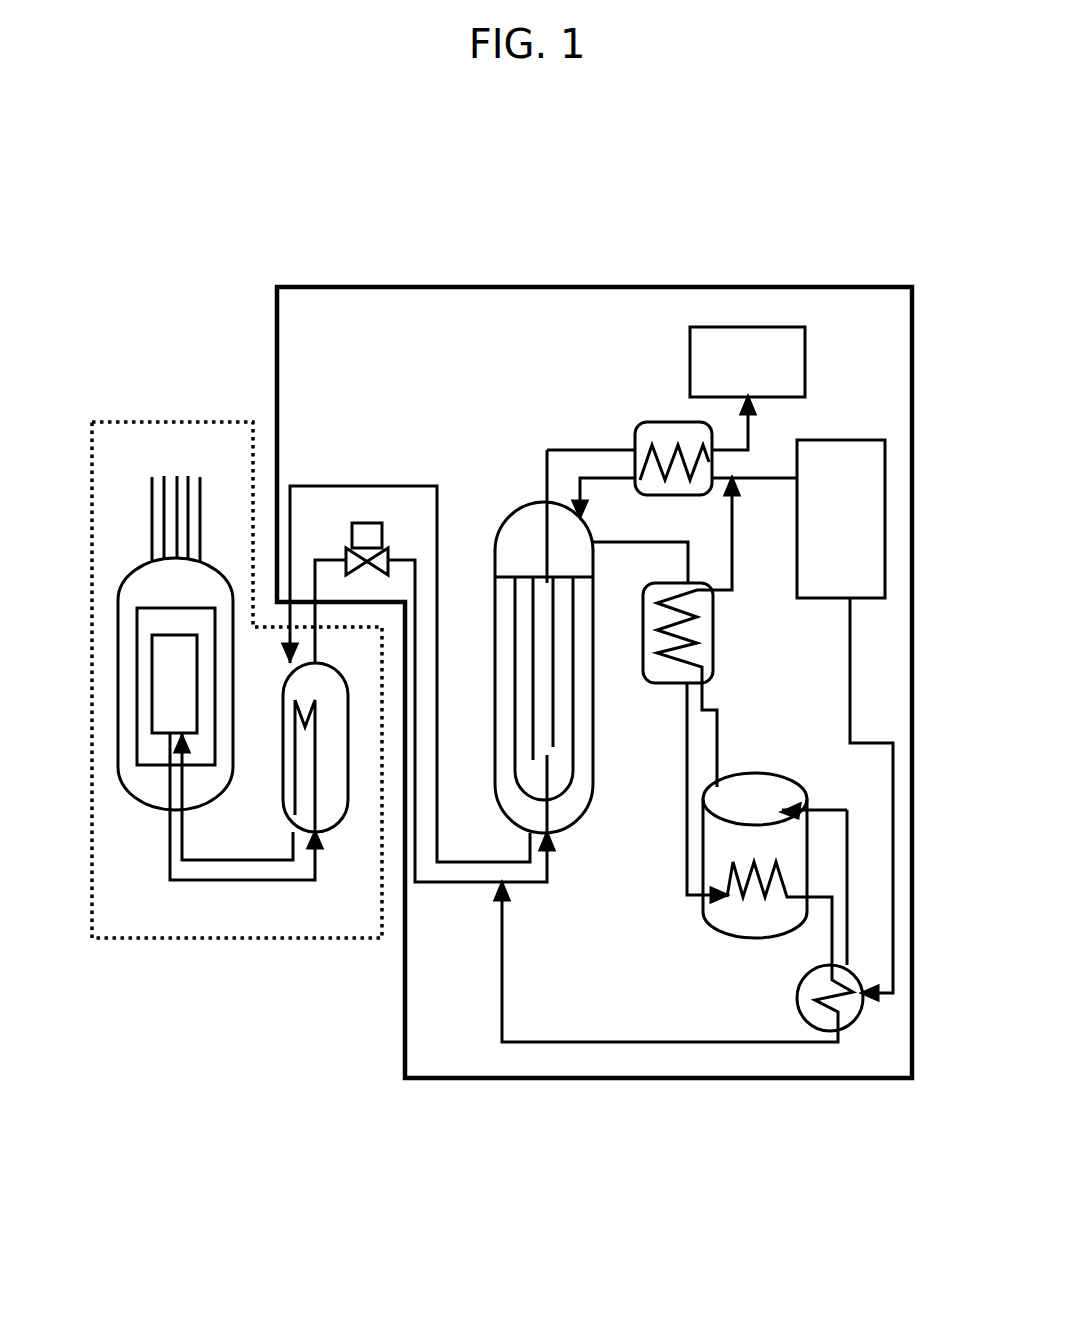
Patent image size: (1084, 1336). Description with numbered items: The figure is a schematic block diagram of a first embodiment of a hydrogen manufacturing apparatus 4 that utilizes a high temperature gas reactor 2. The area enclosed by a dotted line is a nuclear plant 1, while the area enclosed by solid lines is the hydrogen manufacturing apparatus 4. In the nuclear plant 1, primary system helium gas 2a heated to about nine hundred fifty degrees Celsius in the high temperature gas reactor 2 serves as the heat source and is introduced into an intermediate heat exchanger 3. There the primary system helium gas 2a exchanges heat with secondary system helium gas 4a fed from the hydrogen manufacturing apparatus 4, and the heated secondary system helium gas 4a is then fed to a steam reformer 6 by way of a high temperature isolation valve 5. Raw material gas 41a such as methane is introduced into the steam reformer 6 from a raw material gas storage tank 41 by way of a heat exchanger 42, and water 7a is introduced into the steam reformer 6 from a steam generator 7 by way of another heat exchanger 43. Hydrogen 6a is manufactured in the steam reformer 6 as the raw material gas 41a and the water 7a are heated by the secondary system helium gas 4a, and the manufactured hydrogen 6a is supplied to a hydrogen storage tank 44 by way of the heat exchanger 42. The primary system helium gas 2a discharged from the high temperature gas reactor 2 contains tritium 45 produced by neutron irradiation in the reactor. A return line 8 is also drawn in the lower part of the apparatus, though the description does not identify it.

The nuclear plant 1 is at (210, 940).
The high temperature gas reactor 2 is at (118, 715).
The primary system helium gas 2a is at (223, 880).
The intermediate heat exchanger 3 is at (327, 833).
The hydrogen manufacturing apparatus 4 is at (458, 1078).
The secondary system helium gas 4a is at (398, 480).
The high temperature isolation valve 5 is at (366, 520).
The steam reformer 6 is at (522, 507).
The hydrogen 6a is at (580, 450).
The steam generator 7 is at (720, 930).
The water 7a is at (600, 548).
The return pipe 8 is at (648, 1045).
The raw material gas storage tank 41 is at (883, 513).
The raw material gas 41a is at (587, 482).
The heat exchanger 42 is at (637, 420).
The heat exchanger 43 is at (670, 687).
The hydrogen storage tank 44 is at (753, 327).
The tritium 45 is at (268, 880).